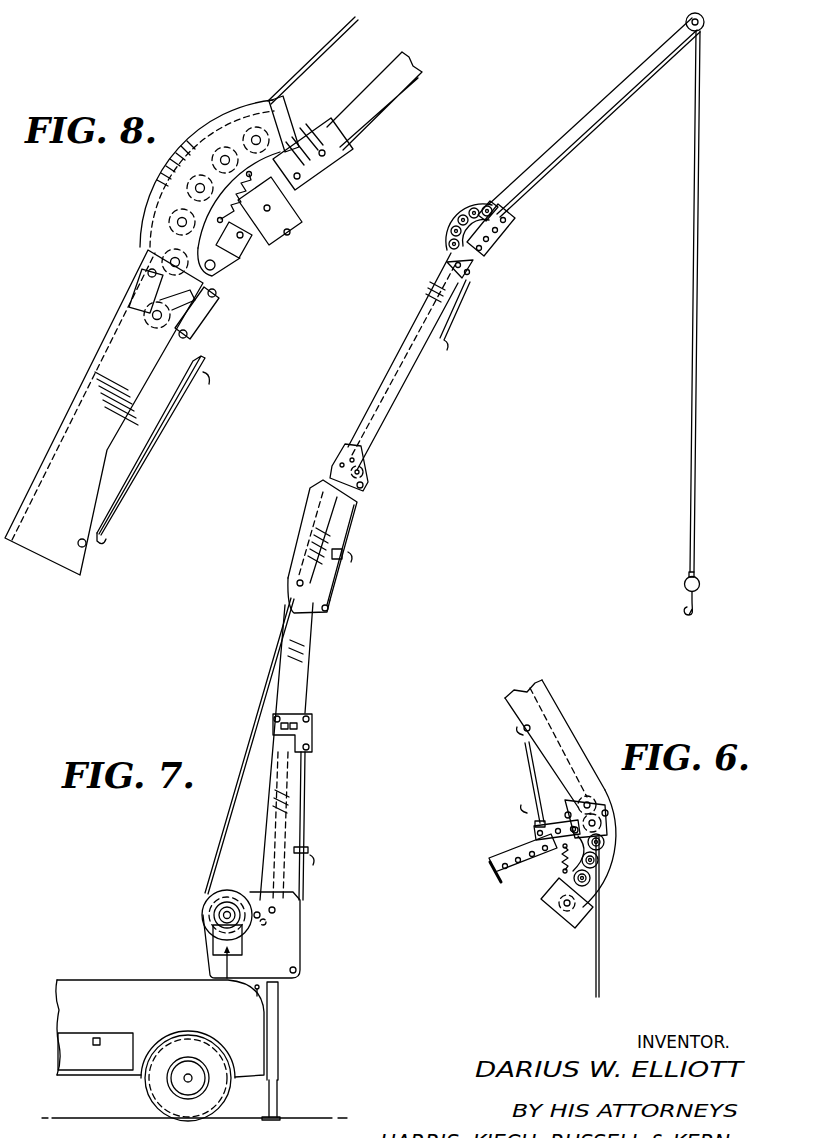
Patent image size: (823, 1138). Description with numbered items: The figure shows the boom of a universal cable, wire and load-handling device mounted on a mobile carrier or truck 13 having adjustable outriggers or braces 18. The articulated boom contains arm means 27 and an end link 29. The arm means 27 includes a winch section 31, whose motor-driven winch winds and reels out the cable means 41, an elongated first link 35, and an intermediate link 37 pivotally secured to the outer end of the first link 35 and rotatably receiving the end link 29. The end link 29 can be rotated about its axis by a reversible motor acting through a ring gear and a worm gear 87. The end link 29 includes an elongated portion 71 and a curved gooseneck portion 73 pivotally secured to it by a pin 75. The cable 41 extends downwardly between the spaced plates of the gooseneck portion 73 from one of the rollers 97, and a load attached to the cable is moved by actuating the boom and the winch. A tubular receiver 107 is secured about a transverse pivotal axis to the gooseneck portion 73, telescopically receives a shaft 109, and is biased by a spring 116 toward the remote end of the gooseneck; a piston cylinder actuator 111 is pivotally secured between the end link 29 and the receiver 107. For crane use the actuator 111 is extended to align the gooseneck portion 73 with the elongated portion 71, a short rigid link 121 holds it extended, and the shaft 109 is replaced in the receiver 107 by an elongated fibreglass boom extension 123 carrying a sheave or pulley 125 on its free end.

In FIG. 7, the mobile carrier or truck 13 is at (128, 973).
In FIG. 7, the adjustable outriggers or braces 18 is at (280, 1090).
In FIG. 7, the arm means 27 is at (281, 585).
In FIG. 8, the end link 29 is at (118, 425).
In FIG. 7, the end link 29 is at (426, 361).
In FIG. 6, the end link 29 is at (538, 734).
In FIG. 7, the winch section 31 is at (199, 932).
In FIG. 7, the elongated first link 35 is at (308, 692).
In FIG. 7, the intermediate link 37 is at (303, 525).
In FIG. 8, the cable means 41 is at (337, 32).
In FIG. 7, the cable means 41 is at (705, 112).
In FIG. 6, the cable means 41 is at (600, 943).
In FIG. 8, the elongated portion 71 is at (72, 407).
In FIG. 7, the elongated portion 71 is at (420, 322).
In FIG. 6, the elongated portion 71 is at (567, 730).
In FIG. 8, the gooseneck portion 73 is at (204, 208).
In FIG. 7, the gooseneck portion 73 is at (454, 225).
In FIG. 6, the gooseneck portion 73 is at (603, 859).
In FIG. 8, the pin 75 is at (148, 273).
In FIG. 7, the worm gear 87 is at (330, 480).
In FIG. 8, the rollers 97 is at (238, 142).
In FIG. 7, the rollers 97 is at (453, 230).
In FIG. 6, the rollers 97 is at (586, 877).
In FIG. 8, the tubular receiving means or receiver 107 is at (330, 168).
In FIG. 7, the tubular receiving means or receiver 107 is at (507, 230).
In FIG. 6, the tubular receiving means or receiver 107 is at (525, 843).
In FIG. 6, the shaft 109 is at (492, 872).
In FIG. 8, the piston cylinder actuator 111 is at (163, 422).
In FIG. 7, the piston cylinder actuator 111 is at (447, 323).
In FIG. 6, the piston cylinder actuator 111 is at (530, 775).
In FIG. 8, the spring 116 is at (222, 210).
In FIG. 8, the short rigid link 121 is at (197, 325).
In FIG. 7, the short rigid link 121 is at (463, 275).
In FIG. 8, the boom extension 123 is at (382, 110).
In FIG. 7, the boom extension 123 is at (595, 133).
In FIG. 7, the sheave or pulley 125 is at (707, 20).